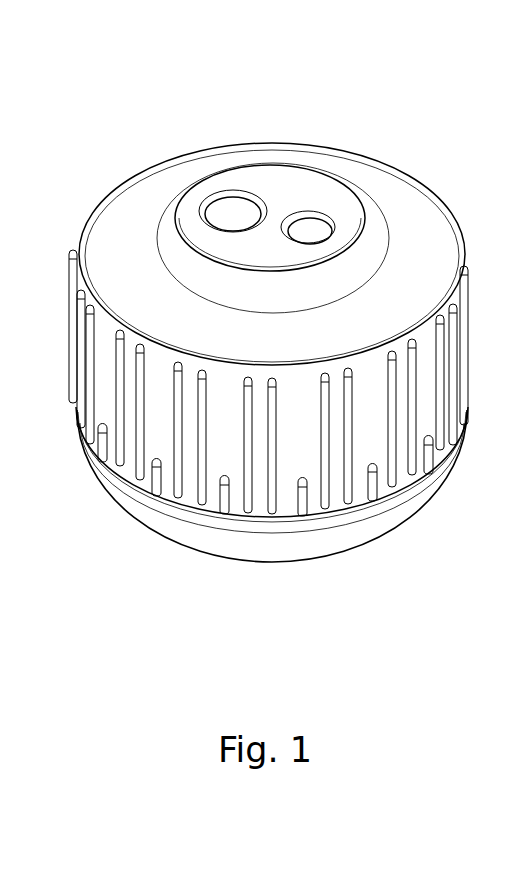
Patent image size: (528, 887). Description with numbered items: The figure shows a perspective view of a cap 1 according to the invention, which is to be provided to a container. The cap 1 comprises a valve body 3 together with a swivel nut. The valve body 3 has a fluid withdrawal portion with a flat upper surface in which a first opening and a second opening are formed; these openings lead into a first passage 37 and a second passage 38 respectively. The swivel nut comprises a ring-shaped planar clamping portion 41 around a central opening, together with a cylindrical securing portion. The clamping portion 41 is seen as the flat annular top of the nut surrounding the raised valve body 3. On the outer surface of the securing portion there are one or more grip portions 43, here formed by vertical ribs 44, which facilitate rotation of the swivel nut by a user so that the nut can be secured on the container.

The cap 1 is at (85, 162).
The valve body 3 is at (283, 188).
The first passage 37 is at (231, 224).
The second passage 38 is at (313, 238).
The clamping portion 41 is at (212, 330).
The grip portion 43 is at (370, 452).
The vertical ribs 44 is at (323, 458).